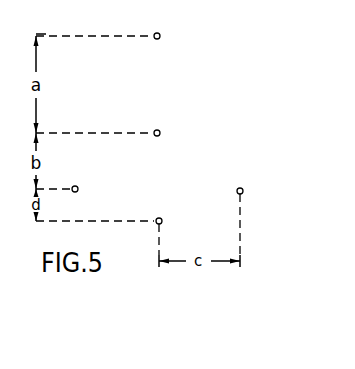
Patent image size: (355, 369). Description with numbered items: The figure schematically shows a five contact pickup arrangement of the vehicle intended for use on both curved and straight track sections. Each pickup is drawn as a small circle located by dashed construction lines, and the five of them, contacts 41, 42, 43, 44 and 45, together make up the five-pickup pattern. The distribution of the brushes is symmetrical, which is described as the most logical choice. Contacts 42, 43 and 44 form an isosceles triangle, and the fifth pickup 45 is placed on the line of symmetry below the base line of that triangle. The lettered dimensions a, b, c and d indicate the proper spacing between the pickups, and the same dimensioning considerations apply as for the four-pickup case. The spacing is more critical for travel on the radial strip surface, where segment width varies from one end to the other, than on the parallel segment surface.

The contact 41 is at (162, 39).
The contact 42 is at (162, 136).
The contact 43 is at (245, 193).
The contact 44 is at (80, 191).
The fifth pickup 45 is at (163, 221).